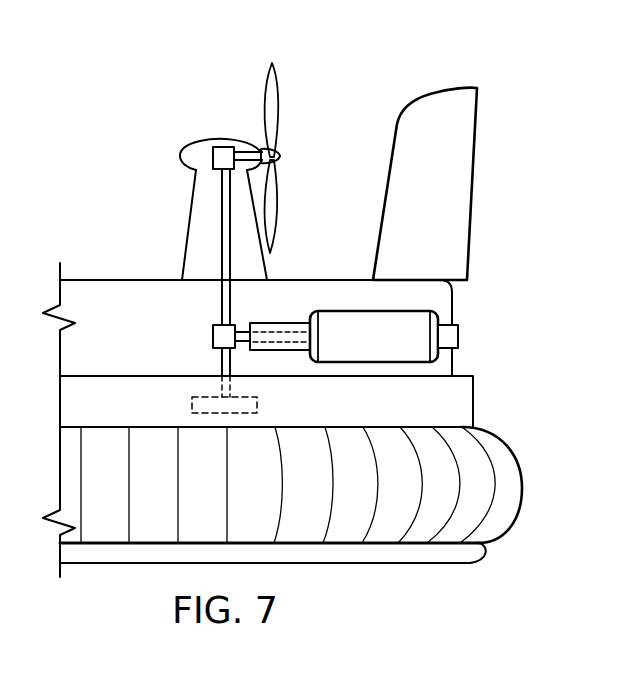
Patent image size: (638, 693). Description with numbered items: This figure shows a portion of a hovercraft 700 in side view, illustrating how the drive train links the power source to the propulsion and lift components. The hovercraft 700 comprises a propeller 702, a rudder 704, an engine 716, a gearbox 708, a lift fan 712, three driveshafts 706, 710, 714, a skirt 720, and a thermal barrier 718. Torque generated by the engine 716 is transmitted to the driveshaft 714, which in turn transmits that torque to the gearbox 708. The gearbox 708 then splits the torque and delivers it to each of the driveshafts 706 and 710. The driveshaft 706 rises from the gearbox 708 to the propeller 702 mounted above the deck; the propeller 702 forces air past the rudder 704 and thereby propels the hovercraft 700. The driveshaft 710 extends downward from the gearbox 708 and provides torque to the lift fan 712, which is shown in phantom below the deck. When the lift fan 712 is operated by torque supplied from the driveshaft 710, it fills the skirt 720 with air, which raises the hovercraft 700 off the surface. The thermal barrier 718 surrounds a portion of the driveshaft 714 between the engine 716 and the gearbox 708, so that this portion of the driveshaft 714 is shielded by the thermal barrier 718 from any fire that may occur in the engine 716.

The hovercraft 700 is at (104, 94).
The propeller 702 is at (214, 128).
The rudder 704 is at (477, 173).
The driveshaft 706 is at (218, 309).
The gearbox 708 is at (212, 336).
The driveshaft 710 is at (218, 370).
The lift fan 712 is at (205, 395).
The driveshaft 714 is at (240, 323).
The engine 716 is at (412, 313).
The thermal barrier 718 is at (283, 350).
The skirt 720 is at (525, 487).